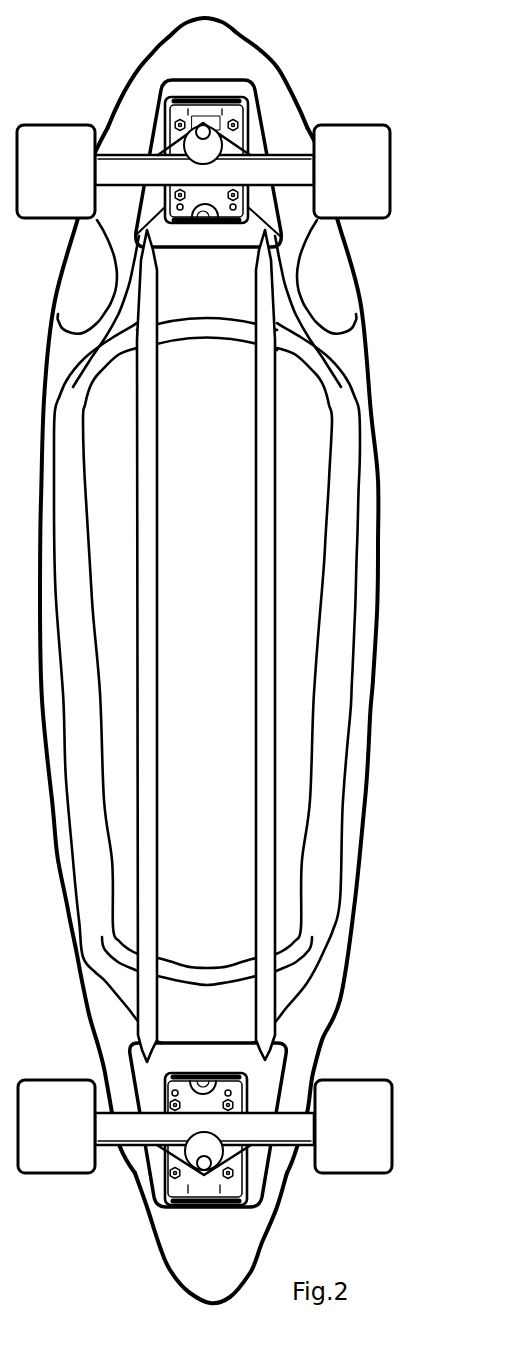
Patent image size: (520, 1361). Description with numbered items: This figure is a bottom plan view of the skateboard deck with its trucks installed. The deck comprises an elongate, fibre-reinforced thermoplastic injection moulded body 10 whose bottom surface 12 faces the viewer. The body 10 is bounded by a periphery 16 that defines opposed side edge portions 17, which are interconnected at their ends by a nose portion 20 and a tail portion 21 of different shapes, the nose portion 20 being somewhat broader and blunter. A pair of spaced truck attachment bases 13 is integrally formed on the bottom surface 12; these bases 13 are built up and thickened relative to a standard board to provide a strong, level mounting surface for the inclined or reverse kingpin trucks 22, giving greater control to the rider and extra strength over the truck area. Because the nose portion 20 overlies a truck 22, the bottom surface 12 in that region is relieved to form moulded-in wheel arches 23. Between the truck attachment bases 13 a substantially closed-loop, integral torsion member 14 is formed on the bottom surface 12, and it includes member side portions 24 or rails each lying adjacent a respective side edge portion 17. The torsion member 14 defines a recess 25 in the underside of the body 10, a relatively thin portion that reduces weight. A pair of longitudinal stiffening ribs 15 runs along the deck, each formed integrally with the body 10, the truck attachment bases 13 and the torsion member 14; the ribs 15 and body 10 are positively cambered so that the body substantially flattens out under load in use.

The body 10 is at (122, 85).
The bottom surface 12 is at (0, 412).
The truck attachment bases 13 is at (176, 88).
The torsion member 14 is at (227, 328).
The longitudinal stiffening ribs 15 is at (262, 616).
The periphery 16 is at (347, 250).
The side edge portions 17 is at (360, 683).
The nose portion 20 is at (238, 52).
The tail portion 21 is at (242, 1247).
The truck 22 is at (240, 170).
The wheel arches 23 is at (88, 283).
The member side portions 24 is at (340, 528).
The recess 25 is at (234, 594).